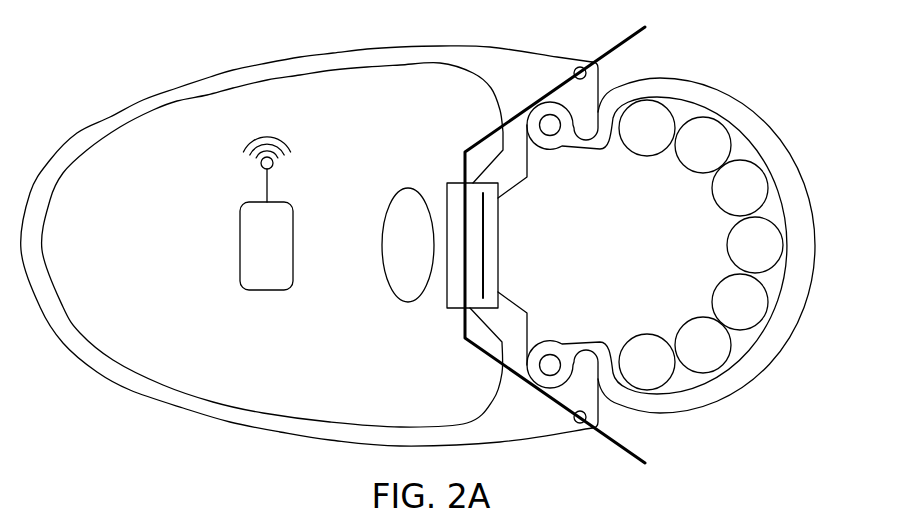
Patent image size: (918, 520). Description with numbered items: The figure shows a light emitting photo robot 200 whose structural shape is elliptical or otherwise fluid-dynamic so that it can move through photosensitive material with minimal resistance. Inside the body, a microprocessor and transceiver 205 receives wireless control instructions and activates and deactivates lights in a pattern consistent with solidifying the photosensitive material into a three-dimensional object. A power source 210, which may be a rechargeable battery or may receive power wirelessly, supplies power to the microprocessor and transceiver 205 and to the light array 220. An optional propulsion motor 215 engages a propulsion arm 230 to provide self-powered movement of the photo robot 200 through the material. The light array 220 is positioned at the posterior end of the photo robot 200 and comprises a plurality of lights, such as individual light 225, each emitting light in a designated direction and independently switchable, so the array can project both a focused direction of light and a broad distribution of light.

The light emitting photo robot 200 is at (183, 408).
The microprocessor and transceiver 205 is at (240, 233).
The power source 210 is at (392, 292).
The propulsion motor 215 is at (453, 309).
The light array 220 is at (813, 235).
The individual light 225 is at (757, 303).
The propulsion arm 230 is at (632, 451).